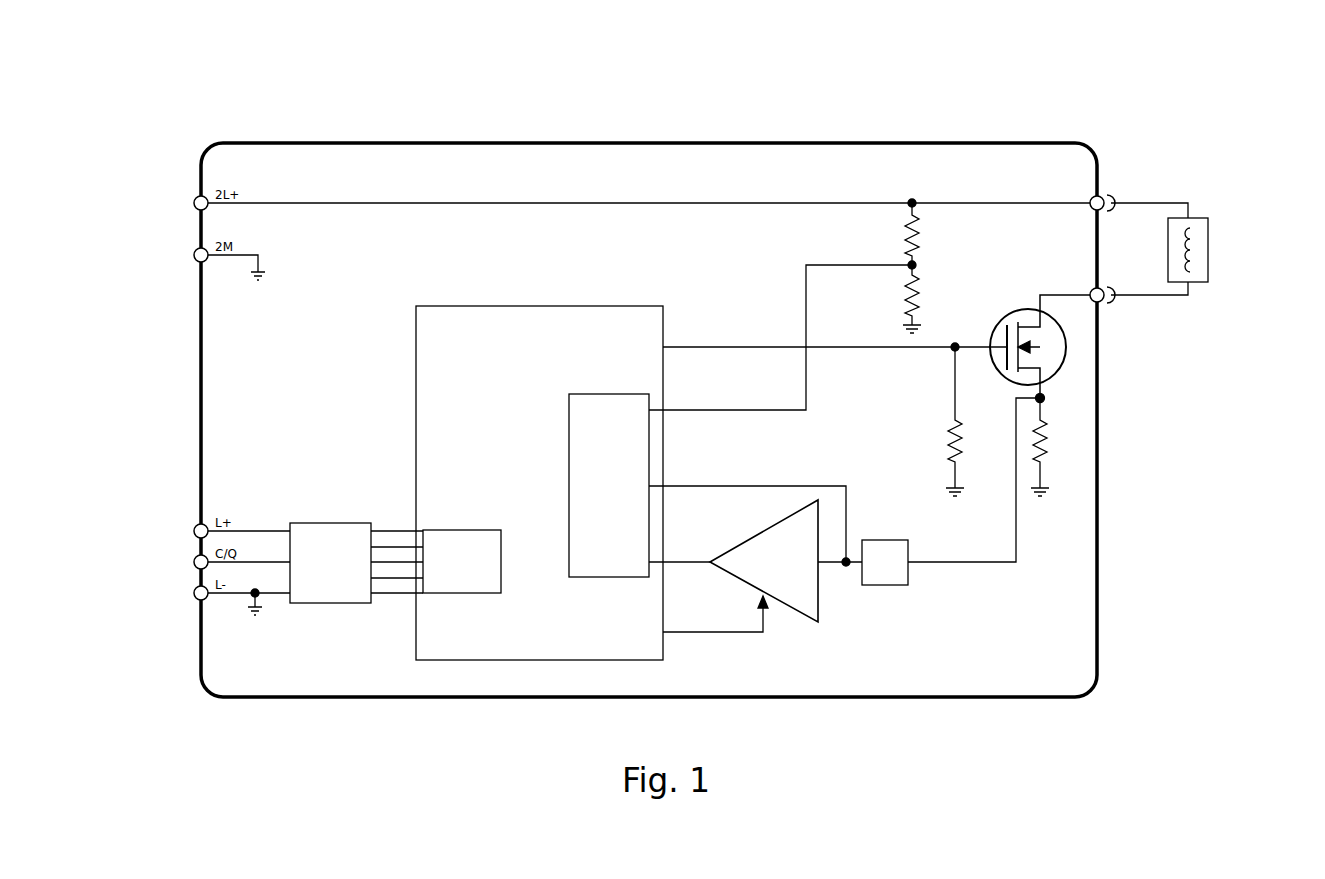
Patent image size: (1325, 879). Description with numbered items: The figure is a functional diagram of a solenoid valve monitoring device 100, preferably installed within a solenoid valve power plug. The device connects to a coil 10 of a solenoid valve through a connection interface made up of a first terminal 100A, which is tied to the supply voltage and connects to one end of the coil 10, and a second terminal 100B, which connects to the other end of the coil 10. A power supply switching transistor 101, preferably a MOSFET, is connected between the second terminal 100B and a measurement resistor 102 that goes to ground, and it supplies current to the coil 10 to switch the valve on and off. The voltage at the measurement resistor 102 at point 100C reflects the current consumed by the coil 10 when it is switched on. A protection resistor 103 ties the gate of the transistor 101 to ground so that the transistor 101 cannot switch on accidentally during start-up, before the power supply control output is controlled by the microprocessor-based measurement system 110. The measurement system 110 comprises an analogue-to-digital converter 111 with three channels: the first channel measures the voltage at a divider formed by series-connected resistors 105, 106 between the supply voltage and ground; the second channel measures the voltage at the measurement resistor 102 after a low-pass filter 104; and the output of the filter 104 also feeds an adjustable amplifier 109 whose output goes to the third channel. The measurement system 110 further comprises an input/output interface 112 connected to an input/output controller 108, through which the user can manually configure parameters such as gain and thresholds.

The solenoid valve monitoring device 100 is at (222, 158).
The first terminal 100A is at (1118, 196).
The second terminal 100B is at (1118, 300).
The point 100C is at (1047, 398).
The power supply switching transistor 101 is at (1053, 345).
The measurement resistor 102 is at (1050, 452).
The protection resistor 103 is at (962, 442).
The low-pass filter 104 is at (900, 578).
The resistor 105 is at (918, 230).
The resistor 106 is at (918, 285).
The input/output controller 108 is at (300, 530).
The adjustable amplifier 109 is at (810, 605).
The microprocessor-based measurement system 110 is at (445, 410).
The analogue-to-digital converter 111 is at (580, 530).
The input/output interface 112 is at (447, 537).
The coil 10 is at (1198, 232).